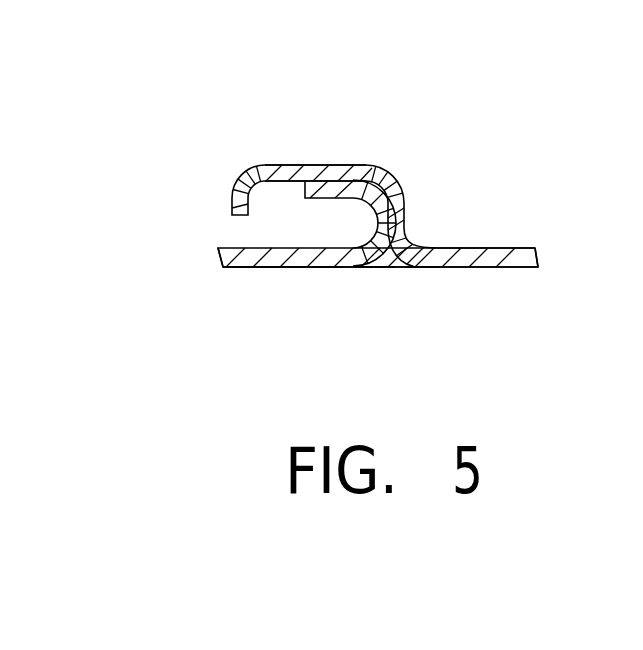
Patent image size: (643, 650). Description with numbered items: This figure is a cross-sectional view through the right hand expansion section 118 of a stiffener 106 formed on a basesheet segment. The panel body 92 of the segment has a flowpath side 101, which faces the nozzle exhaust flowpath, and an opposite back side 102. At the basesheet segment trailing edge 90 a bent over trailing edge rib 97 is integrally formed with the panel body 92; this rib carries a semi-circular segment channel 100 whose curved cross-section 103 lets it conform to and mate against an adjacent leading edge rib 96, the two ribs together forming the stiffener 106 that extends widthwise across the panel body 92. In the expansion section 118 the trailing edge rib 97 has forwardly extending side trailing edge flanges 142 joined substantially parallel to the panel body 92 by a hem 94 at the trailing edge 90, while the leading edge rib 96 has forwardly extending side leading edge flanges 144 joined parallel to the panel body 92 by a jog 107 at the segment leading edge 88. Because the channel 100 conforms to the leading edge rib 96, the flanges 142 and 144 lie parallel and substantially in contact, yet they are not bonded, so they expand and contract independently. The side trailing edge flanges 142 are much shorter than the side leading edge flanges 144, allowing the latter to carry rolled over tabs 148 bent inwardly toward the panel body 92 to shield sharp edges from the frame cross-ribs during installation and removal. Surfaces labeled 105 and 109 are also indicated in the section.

The segment leading edge 88 is at (343, 268).
The basesheet segment trailing edge 90 is at (422, 268).
The panel body 92 is at (235, 268).
The hem 94 is at (380, 215).
The leading edge rib 96 is at (404, 182).
The bent over trailing edge rib 97 is at (326, 181).
The segment channel 100 is at (380, 167).
The flowpath side 101 is at (498, 268).
The back side 102 is at (527, 248).
The curved cross-section 103 is at (372, 268).
The top surface of rail 105 is at (443, 248).
The stiffener 106 is at (279, 161).
The jog 107 is at (404, 222).
The clip lower leg bottom 109 is at (297, 268).
The right hand expansion section 118 is at (302, 167).
The side trailing edge flanges 142 is at (303, 200).
The side leading edge flanges 144 is at (263, 167).
The rolled over tabs 148 is at (232, 205).